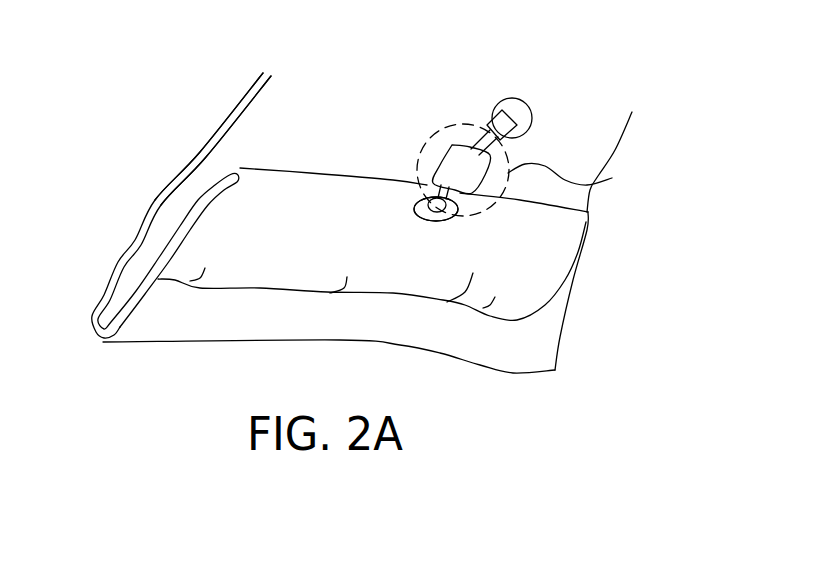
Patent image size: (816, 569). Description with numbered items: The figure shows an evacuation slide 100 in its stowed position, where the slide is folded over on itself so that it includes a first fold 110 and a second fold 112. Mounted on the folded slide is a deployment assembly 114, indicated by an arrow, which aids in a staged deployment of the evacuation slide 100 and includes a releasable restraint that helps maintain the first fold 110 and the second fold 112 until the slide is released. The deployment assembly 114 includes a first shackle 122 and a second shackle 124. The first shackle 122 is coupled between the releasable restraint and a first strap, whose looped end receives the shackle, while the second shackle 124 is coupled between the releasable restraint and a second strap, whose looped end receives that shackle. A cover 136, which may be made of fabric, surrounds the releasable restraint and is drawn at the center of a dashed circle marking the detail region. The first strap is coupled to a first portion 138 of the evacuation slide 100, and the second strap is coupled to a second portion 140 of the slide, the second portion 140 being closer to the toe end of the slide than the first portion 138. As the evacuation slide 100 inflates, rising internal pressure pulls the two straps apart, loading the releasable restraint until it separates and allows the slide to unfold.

The evacuation slide 100 is at (542, 268).
The first fold 110 is at (99, 340).
The second fold 112 is at (223, 170).
The deployment assembly 114 is at (552, 120).
The first shackle 122 is at (493, 130).
The second shackle 124 is at (455, 212).
The cover 136 is at (458, 170).
The first portion 138 is at (513, 107).
The second portion 140 is at (417, 211).